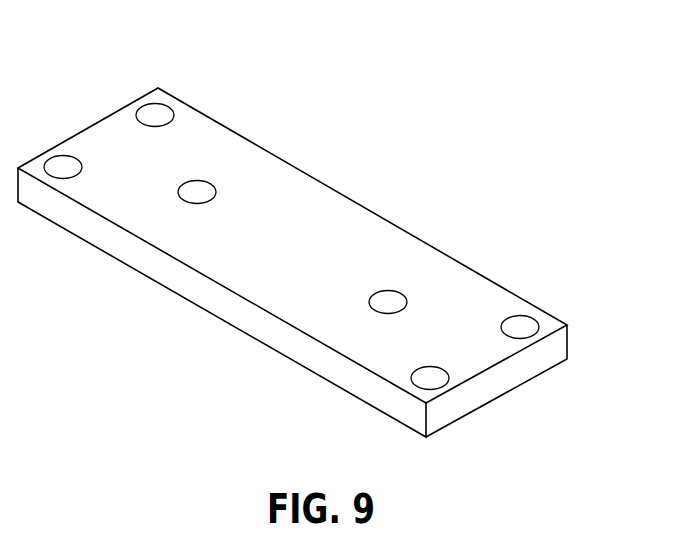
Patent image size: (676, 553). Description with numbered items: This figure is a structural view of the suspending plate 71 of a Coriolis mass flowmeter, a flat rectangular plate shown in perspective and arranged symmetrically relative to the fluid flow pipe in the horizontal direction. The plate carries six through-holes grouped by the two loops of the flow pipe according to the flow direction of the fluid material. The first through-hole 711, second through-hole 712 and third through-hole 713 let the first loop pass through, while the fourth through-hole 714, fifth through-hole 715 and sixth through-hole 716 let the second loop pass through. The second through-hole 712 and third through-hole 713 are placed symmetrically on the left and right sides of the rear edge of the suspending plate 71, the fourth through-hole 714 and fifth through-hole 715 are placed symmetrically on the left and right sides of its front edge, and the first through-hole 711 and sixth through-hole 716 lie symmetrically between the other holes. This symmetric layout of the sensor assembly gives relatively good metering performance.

The suspending plate 71 is at (318, 223).
The first through-hole 711 is at (387, 302).
The second through-hole 712 is at (155, 114).
The third through-hole 713 is at (521, 327).
The fourth through-hole 714 is at (62, 167).
The fifth through-hole 715 is at (431, 378).
The sixth through-hole 716 is at (198, 191).